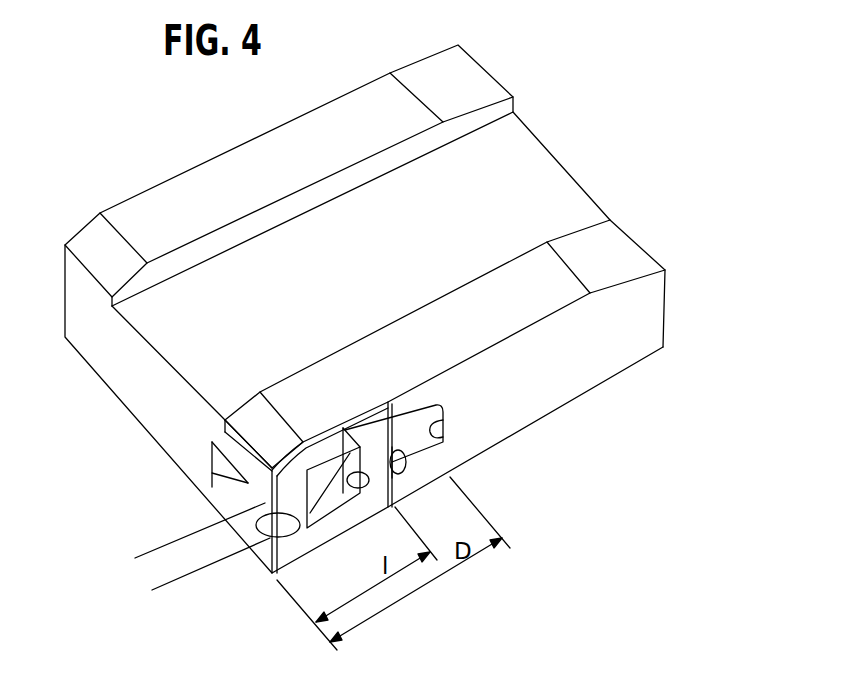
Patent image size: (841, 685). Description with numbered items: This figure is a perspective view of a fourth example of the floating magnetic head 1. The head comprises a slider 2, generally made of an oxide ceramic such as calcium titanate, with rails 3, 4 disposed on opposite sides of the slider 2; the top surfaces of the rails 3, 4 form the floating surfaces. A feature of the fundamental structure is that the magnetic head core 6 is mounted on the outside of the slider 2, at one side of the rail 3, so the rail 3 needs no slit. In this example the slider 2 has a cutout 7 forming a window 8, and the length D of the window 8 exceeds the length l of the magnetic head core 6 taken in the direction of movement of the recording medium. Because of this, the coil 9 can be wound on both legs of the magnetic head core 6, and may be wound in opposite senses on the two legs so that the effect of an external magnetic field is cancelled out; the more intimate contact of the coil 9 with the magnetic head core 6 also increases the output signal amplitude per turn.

The floating magnetic head 1 is at (527, 115).
The slider 2 is at (545, 205).
The rail 3 is at (543, 283).
The rail 4 is at (257, 162).
The magnetic head core 6 is at (317, 532).
The cutout 7 is at (212, 463).
The window 8 is at (447, 443).
The coil 9 is at (220, 560).